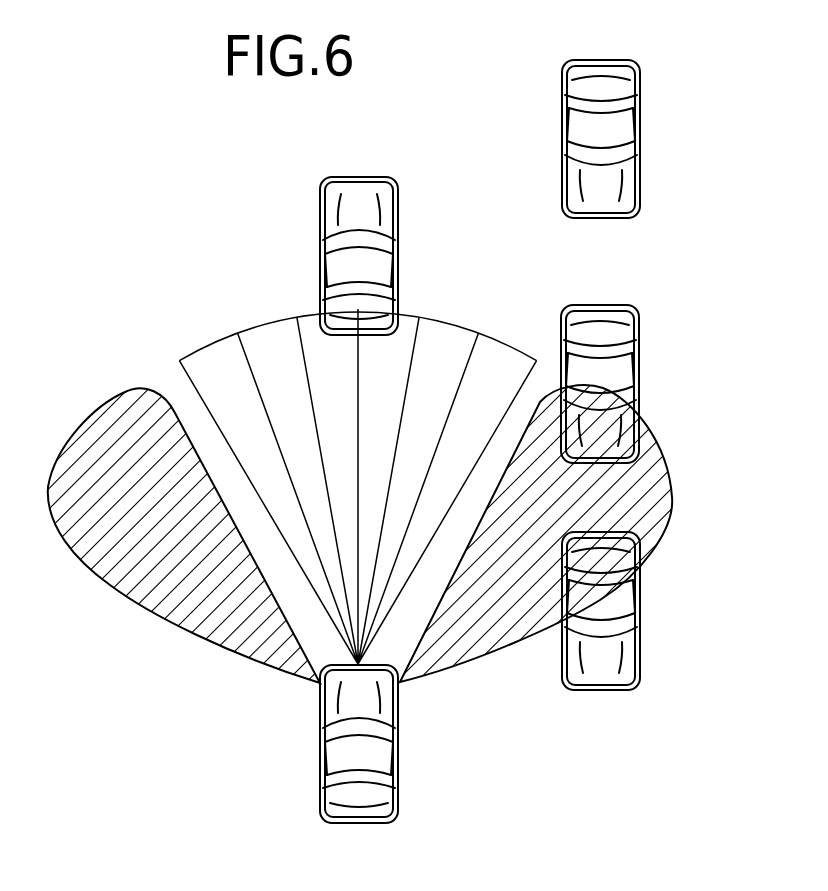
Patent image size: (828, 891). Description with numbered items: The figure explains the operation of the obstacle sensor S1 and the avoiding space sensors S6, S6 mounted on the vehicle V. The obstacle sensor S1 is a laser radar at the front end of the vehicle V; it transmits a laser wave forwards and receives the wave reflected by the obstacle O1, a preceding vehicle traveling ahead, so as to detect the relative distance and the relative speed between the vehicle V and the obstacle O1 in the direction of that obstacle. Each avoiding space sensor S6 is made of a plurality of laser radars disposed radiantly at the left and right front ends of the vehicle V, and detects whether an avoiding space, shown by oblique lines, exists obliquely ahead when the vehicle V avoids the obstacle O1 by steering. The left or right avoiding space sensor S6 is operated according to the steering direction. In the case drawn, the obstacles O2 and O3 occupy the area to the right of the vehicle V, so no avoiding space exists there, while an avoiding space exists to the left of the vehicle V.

The obstacle O1 is at (375, 265).
The obstacle O2 is at (613, 368).
The obstacle O3 is at (612, 605).
The vehicle V is at (367, 763).
The obstacle sensor S1 is at (363, 661).
The avoiding space sensor S6 is at (408, 707).